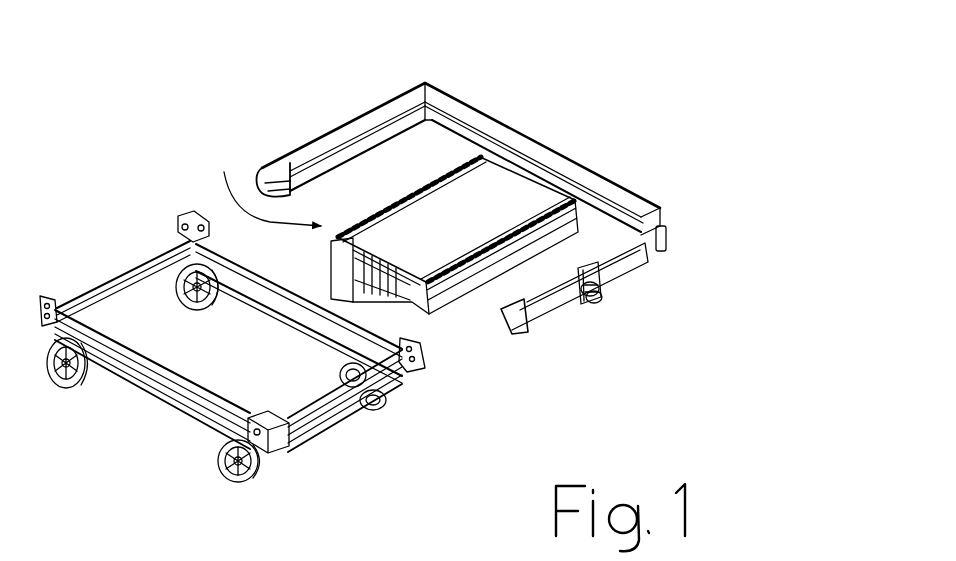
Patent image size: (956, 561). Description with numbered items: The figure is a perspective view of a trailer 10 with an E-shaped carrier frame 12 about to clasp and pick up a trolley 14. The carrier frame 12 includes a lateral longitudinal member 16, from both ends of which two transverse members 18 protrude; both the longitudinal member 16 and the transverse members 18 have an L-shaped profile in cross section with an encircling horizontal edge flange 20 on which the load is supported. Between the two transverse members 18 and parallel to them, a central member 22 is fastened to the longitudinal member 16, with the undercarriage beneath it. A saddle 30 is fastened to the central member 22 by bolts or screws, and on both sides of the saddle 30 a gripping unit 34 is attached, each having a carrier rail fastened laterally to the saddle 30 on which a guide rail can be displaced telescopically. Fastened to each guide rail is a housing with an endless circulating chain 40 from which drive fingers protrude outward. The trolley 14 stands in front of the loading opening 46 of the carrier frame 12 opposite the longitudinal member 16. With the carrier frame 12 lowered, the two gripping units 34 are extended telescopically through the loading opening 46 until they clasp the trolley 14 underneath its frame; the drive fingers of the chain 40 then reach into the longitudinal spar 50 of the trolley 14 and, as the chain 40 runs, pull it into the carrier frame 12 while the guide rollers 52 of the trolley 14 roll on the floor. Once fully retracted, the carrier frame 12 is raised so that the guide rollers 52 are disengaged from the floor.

The trailer 10 is at (325, 117).
The carrier frame 12 is at (543, 138).
The trolley 14 is at (121, 430).
The longitudinal member 16 is at (588, 177).
The transverse member 18 is at (630, 252).
The edge flange 20 is at (310, 170).
The central member 22 is at (405, 302).
The saddle 30 is at (490, 177).
The gripping unit 34 is at (256, 179).
The chain 40 is at (420, 177).
The loading opening 46 is at (516, 282).
The longitudinal spar 50 is at (240, 305).
The guide roller 52 is at (380, 410).